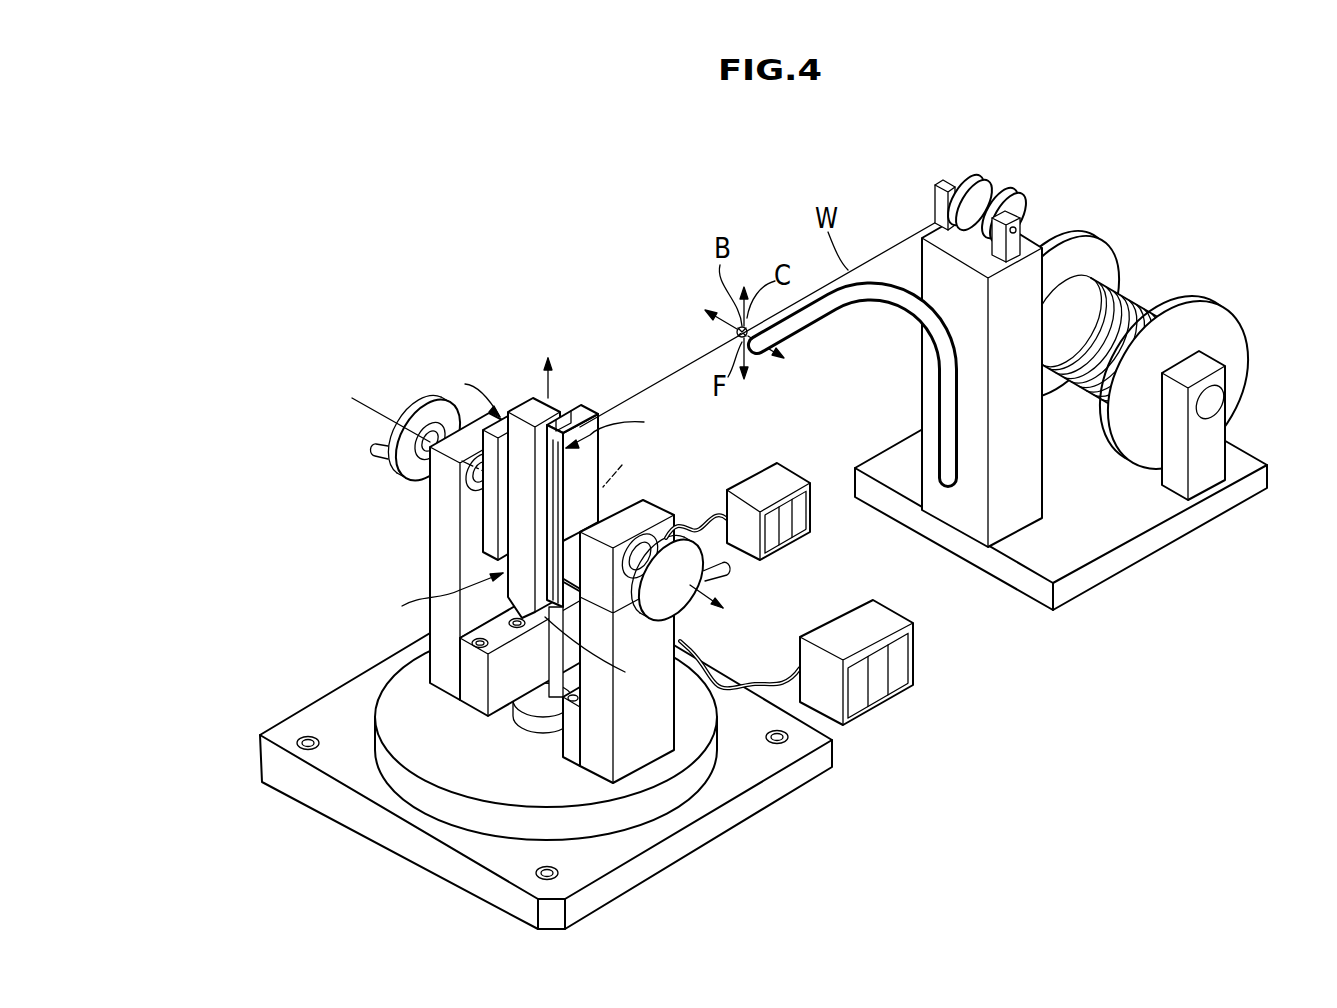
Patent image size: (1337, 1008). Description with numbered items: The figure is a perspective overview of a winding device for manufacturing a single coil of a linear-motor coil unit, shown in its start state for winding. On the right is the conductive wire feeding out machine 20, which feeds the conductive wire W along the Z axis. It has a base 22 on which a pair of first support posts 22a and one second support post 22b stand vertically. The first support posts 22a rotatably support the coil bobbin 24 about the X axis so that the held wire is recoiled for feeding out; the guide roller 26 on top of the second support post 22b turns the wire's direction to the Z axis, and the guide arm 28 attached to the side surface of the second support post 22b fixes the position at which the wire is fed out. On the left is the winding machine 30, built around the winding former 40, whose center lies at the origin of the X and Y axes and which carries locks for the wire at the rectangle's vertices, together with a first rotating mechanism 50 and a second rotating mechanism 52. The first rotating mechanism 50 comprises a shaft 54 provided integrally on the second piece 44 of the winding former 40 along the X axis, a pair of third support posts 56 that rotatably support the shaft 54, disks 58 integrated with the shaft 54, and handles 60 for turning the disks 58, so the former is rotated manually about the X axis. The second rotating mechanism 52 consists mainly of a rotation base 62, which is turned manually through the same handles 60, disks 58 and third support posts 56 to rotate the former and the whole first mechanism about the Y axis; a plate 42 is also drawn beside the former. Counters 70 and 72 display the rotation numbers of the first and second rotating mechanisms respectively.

The conductive wire feeding out machine 20 is at (1110, 222).
The base 22 is at (1085, 578).
The first support posts 22a is at (1220, 428).
The second support post 22b is at (1018, 498).
The coil bobbin 24 is at (1240, 346).
The guide roller 26 is at (1010, 198).
The guide arm 28 is at (868, 289).
The winding machine 30 is at (446, 318).
The winding former 40 is at (533, 397).
The plate 42 is at (510, 405).
The second piece 44 is at (573, 417).
The first rotating mechanism 50 is at (620, 812).
The second rotating mechanism 52 is at (369, 431).
The shaft 54 is at (608, 510).
The third support posts 56 is at (440, 526).
The disks 58 is at (413, 414).
The handles 60 is at (373, 448).
The rotation base 62 is at (648, 830).
The counter 70 is at (780, 476).
The counter 72 is at (877, 620).